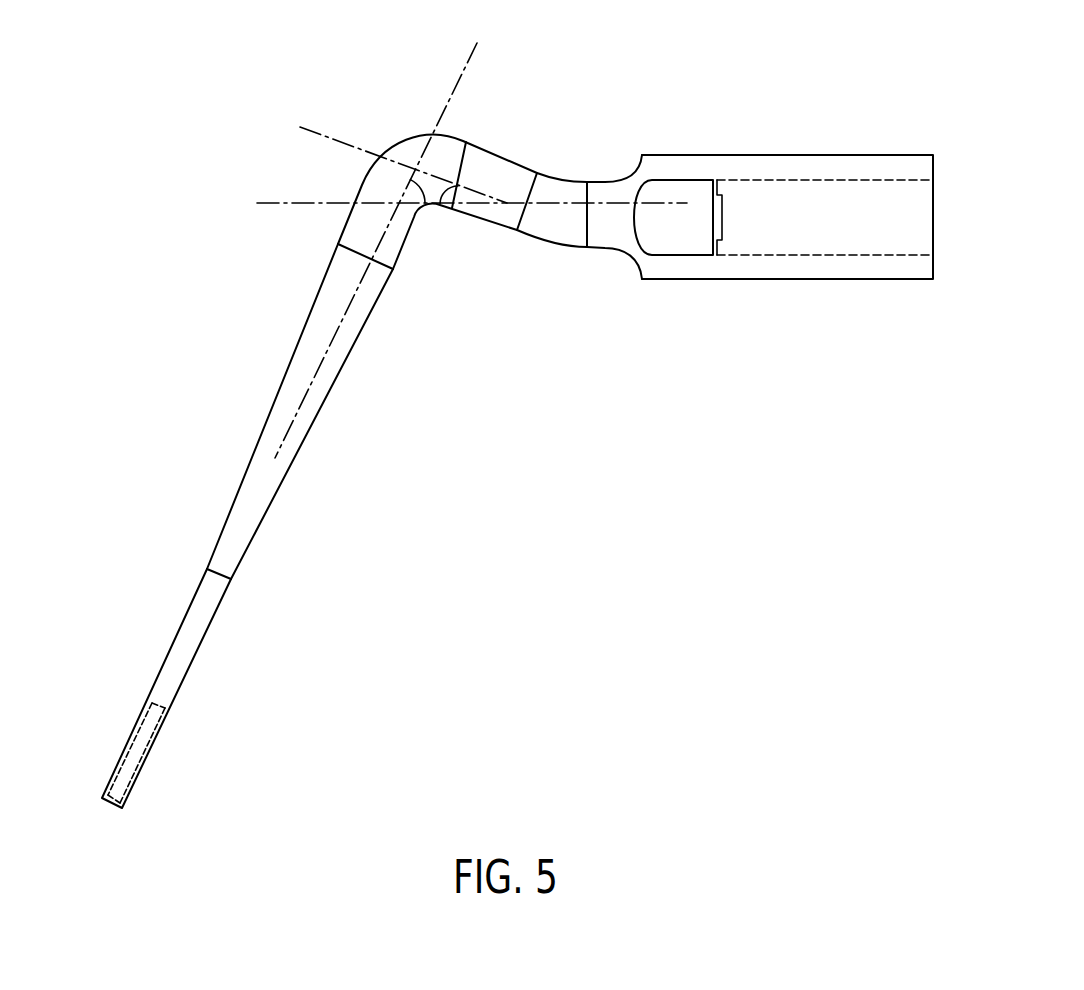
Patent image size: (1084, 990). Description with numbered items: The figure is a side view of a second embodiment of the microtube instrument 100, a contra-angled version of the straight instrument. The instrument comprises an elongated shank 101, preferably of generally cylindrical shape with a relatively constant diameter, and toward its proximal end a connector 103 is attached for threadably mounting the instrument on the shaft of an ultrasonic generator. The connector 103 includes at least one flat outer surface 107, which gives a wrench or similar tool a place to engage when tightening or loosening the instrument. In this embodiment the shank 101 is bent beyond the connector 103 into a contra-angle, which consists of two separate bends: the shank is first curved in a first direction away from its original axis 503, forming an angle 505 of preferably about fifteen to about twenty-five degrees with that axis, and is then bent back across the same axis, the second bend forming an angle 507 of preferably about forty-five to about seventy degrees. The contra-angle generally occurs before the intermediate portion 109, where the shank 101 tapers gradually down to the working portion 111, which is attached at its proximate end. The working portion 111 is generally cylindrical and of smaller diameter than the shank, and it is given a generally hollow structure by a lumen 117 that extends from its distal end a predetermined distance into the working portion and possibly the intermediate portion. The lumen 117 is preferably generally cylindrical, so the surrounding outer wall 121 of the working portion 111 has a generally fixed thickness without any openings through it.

The microtube instrument 100 is at (657, 67).
The elongated shank 101 is at (502, 227).
The connector 103 is at (793, 280).
The flat outer surface 107 is at (682, 245).
The intermediate portion 109 is at (337, 380).
The working portion 111 is at (200, 648).
The lumen 117 is at (140, 723).
The outer wall 121 is at (168, 728).
The original axis 503 is at (315, 202).
The angle of the first bend 505 is at (441, 207).
The angle of the second bend 507 is at (415, 178).